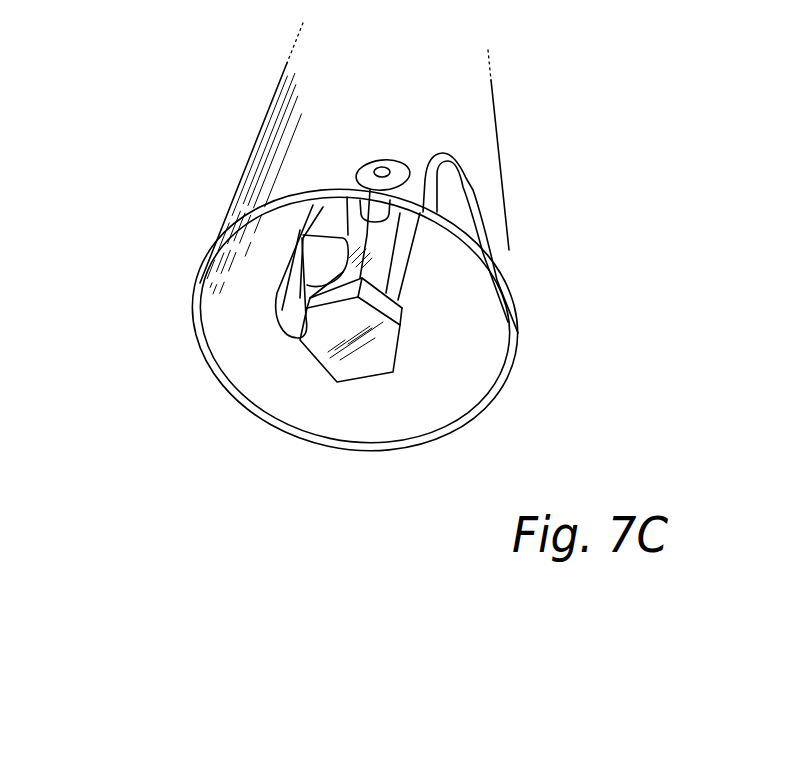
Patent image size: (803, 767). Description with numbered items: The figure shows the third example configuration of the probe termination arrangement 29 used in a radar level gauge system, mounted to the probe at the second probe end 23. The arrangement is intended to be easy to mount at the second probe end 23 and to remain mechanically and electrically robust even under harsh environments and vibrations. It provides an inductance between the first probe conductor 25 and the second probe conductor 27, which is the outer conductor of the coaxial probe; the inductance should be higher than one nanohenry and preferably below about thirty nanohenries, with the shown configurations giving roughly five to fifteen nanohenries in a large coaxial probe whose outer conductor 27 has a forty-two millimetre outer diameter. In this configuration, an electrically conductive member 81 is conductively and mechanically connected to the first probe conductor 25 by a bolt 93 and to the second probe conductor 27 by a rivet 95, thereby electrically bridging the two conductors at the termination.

The second probe end 23 is at (581, 163).
The first probe conductor 25 is at (407, 233).
The second probe conductor 27 is at (318, 130).
The probe termination arrangement 29 is at (256, 262).
The electrically conductive member 81 is at (313, 238).
The bolt 93 is at (337, 337).
The rivet 95 is at (403, 163).